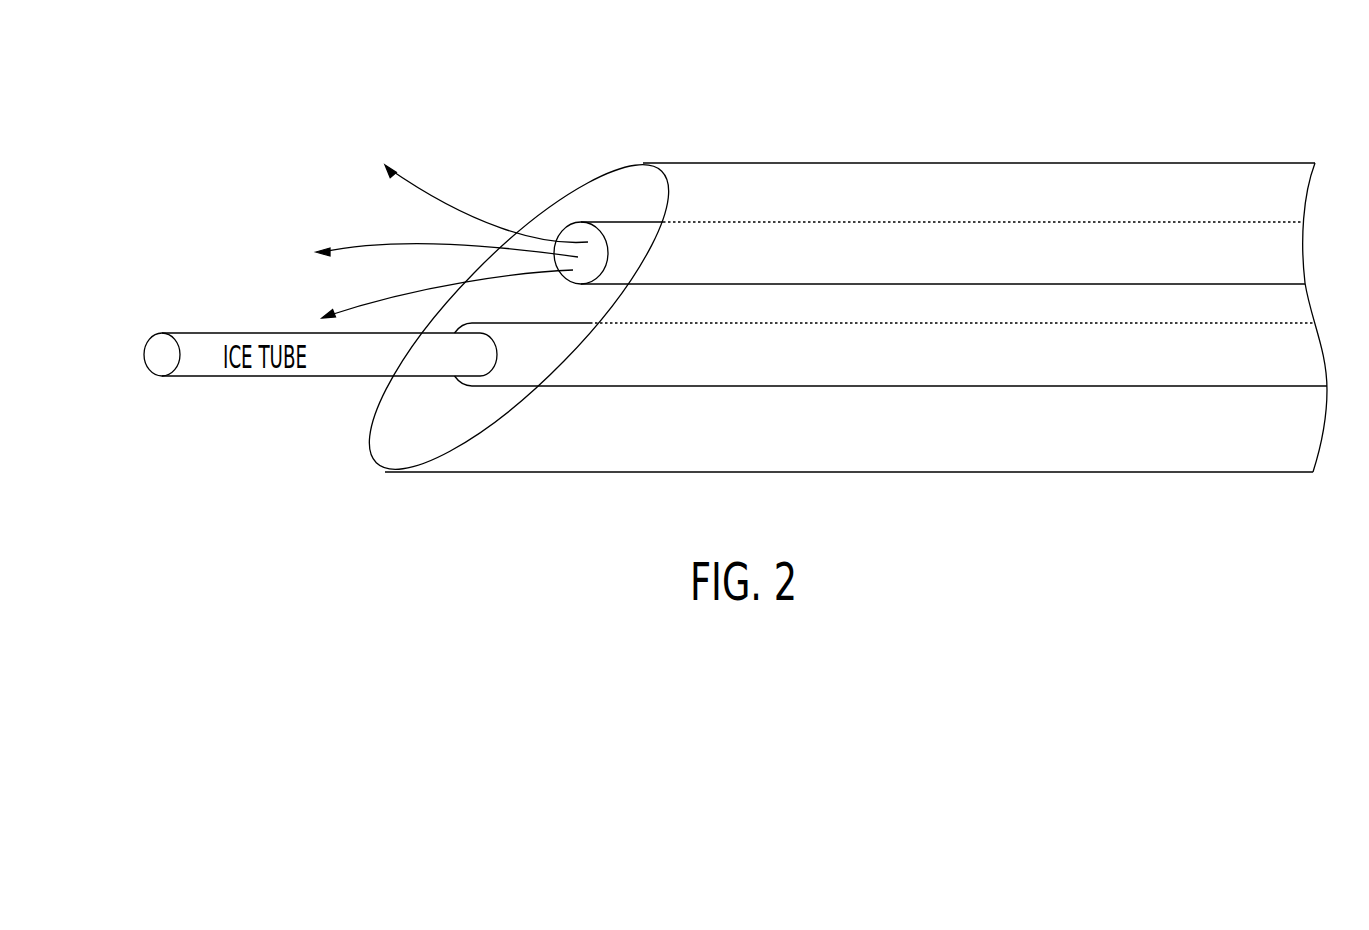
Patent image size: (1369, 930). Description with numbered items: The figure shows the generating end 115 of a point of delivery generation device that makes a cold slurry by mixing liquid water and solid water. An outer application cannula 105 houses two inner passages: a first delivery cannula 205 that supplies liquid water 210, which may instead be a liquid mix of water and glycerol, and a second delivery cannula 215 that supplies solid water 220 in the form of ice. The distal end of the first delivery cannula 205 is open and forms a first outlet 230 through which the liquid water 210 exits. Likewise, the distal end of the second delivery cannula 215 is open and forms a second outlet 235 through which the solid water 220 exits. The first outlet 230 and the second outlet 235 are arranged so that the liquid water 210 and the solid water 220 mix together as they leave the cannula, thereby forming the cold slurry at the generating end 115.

The application cannula 105 is at (793, 163).
The generating end 115 is at (437, 119).
The first delivery cannula 205 is at (987, 220).
The liquid water 210 is at (1028, 247).
The second delivery cannula 215 is at (978, 385).
The solid water 220 is at (1017, 353).
The first outlet 230 is at (613, 222).
The second outlet 235 is at (460, 386).